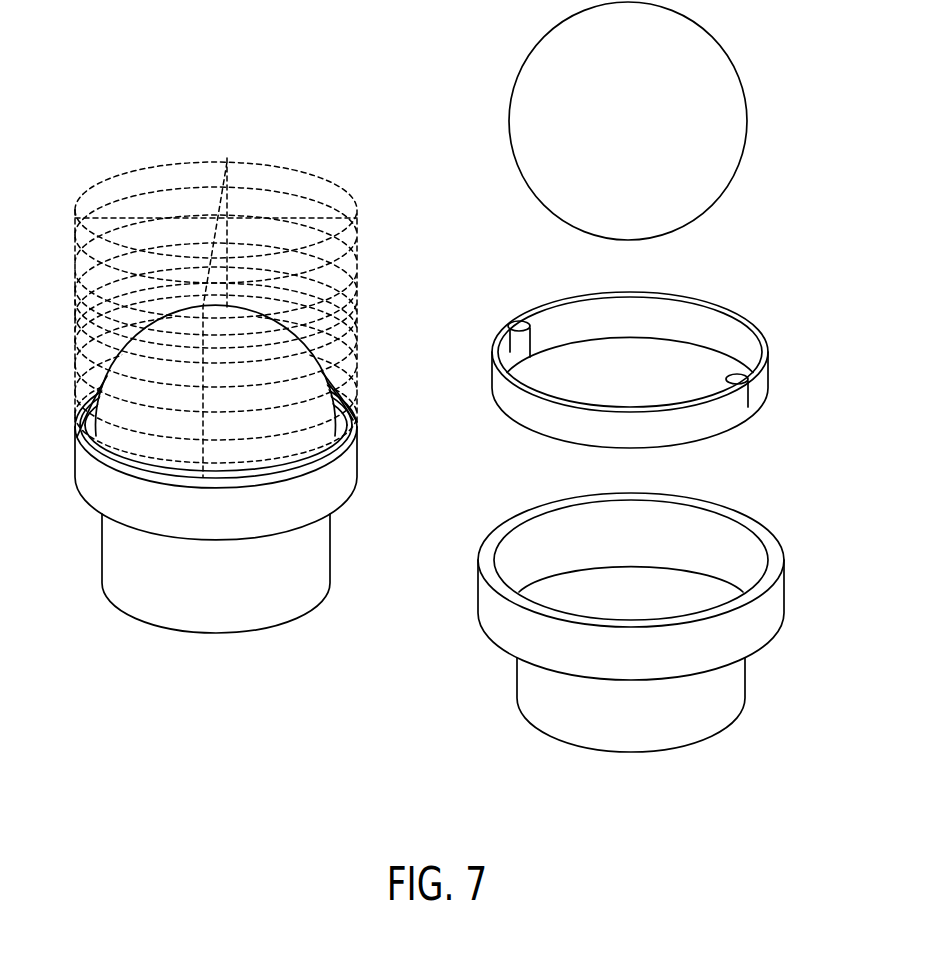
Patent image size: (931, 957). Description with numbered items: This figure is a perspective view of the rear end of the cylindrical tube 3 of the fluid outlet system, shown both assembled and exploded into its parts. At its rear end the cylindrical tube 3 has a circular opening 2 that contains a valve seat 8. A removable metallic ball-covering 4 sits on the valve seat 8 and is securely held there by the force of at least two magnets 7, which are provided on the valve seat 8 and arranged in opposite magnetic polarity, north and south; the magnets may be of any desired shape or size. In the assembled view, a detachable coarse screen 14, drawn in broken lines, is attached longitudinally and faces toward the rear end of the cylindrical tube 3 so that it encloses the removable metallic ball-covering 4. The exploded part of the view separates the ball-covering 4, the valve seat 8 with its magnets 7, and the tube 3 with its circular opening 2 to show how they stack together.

The circular opening 2 is at (356, 451).
The cylindrical tube 3 is at (117, 546).
The removable metallic ball-covering 4 is at (90, 436).
The magnets 7 is at (352, 421).
The valve seat 8 is at (84, 418).
The detachable coarse screen 14 is at (143, 192).